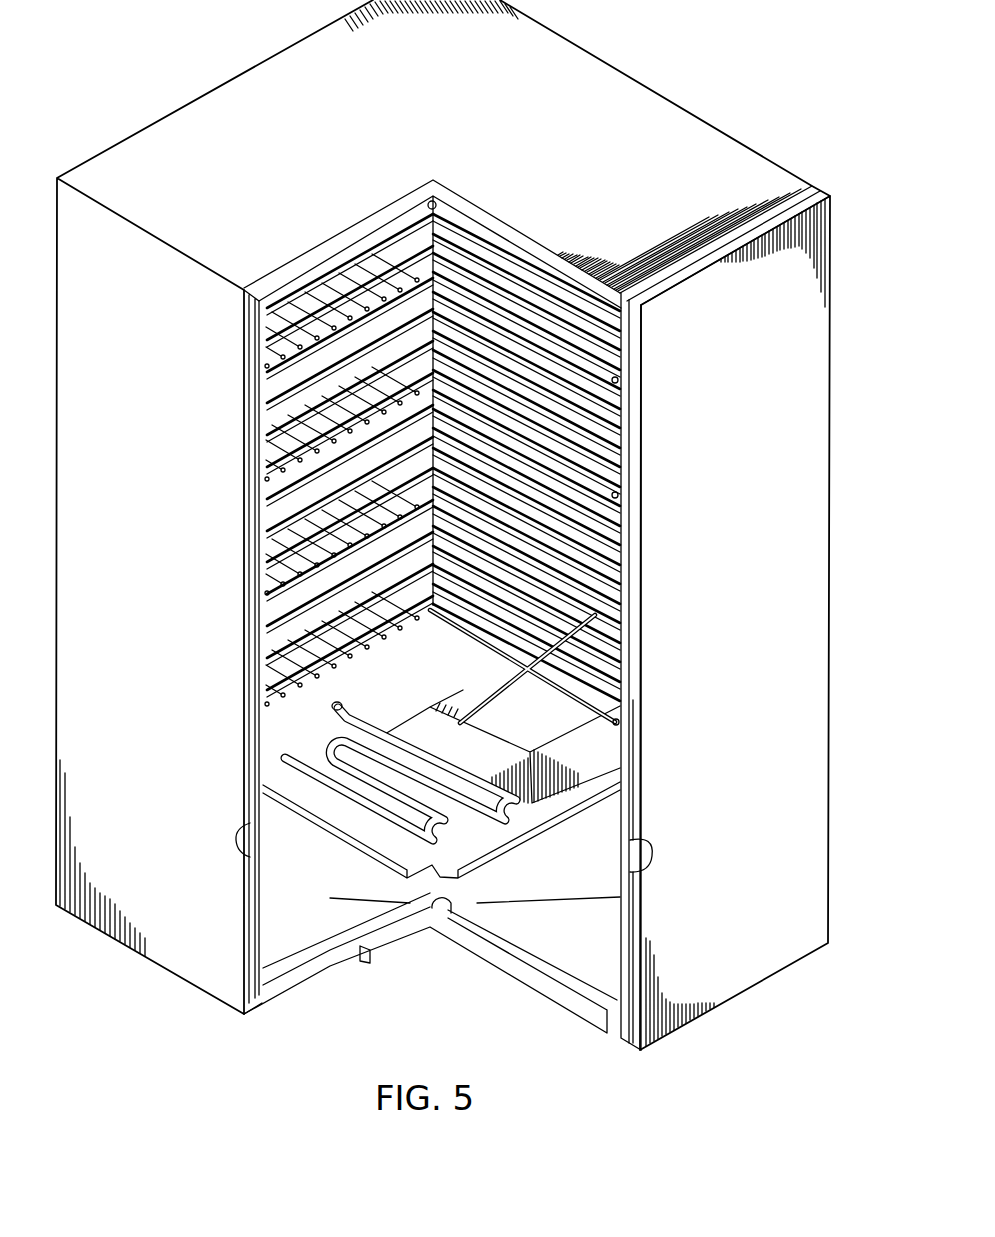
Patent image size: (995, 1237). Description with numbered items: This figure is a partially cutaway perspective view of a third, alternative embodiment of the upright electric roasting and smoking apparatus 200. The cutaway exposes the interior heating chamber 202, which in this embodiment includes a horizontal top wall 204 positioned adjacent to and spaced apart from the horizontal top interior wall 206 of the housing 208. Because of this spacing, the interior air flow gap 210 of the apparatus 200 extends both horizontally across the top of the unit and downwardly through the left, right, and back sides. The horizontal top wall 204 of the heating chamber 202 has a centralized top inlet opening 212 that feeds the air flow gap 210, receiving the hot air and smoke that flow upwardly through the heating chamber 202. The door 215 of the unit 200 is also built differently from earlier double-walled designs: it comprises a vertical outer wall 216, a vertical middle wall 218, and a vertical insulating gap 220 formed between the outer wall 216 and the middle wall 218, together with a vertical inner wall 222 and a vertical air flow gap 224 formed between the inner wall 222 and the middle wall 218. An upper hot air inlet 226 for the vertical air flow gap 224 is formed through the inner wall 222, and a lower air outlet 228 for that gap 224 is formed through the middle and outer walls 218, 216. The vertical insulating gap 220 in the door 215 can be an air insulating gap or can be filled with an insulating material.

The upright electric roasting and smoking apparatus 200 is at (224, 52).
The interior heating chamber 202 is at (277, 722).
The horizontal top wall 204 is at (527, 250).
The horizontal top interior wall 206 is at (332, 248).
The housing 208 is at (178, 958).
The interior air flow gap 210 is at (300, 272).
The centralized top inlet opening 212 is at (448, 203).
The door 215 is at (825, 360).
The vertical outer wall 216 is at (825, 470).
The vertical middle wall 218 is at (633, 568).
The vertical insulating gap 220 is at (640, 475).
The vertical inner wall 222 is at (620, 927).
The vertical air flow gap 224 is at (632, 752).
The upper hot air inlet 226 is at (635, 358).
The lower air outlet 228 is at (652, 862).